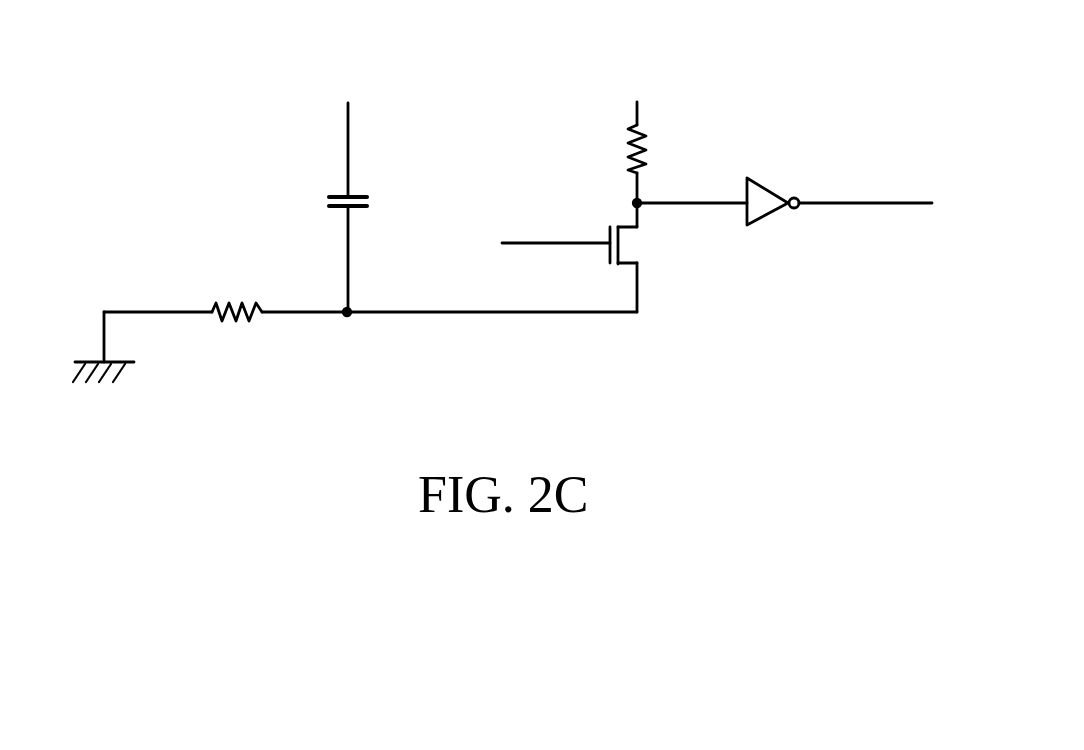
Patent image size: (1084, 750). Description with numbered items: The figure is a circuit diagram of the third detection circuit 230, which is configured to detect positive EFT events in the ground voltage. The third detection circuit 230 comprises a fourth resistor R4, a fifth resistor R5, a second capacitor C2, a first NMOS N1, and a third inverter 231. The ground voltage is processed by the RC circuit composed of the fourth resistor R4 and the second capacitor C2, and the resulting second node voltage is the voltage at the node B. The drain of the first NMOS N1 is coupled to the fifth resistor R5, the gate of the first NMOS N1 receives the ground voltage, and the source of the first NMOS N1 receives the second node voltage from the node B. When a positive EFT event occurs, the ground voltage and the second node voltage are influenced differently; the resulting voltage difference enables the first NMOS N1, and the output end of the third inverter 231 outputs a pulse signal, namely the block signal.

The third detection circuit 230 is at (817, 38).
The third inverter 231 is at (772, 185).
The fourth resistor R4 is at (240, 322).
The fifth resistor R5 is at (648, 147).
The second capacitor C2 is at (367, 200).
The first NMOS N1 is at (628, 245).
The node B is at (347, 311).